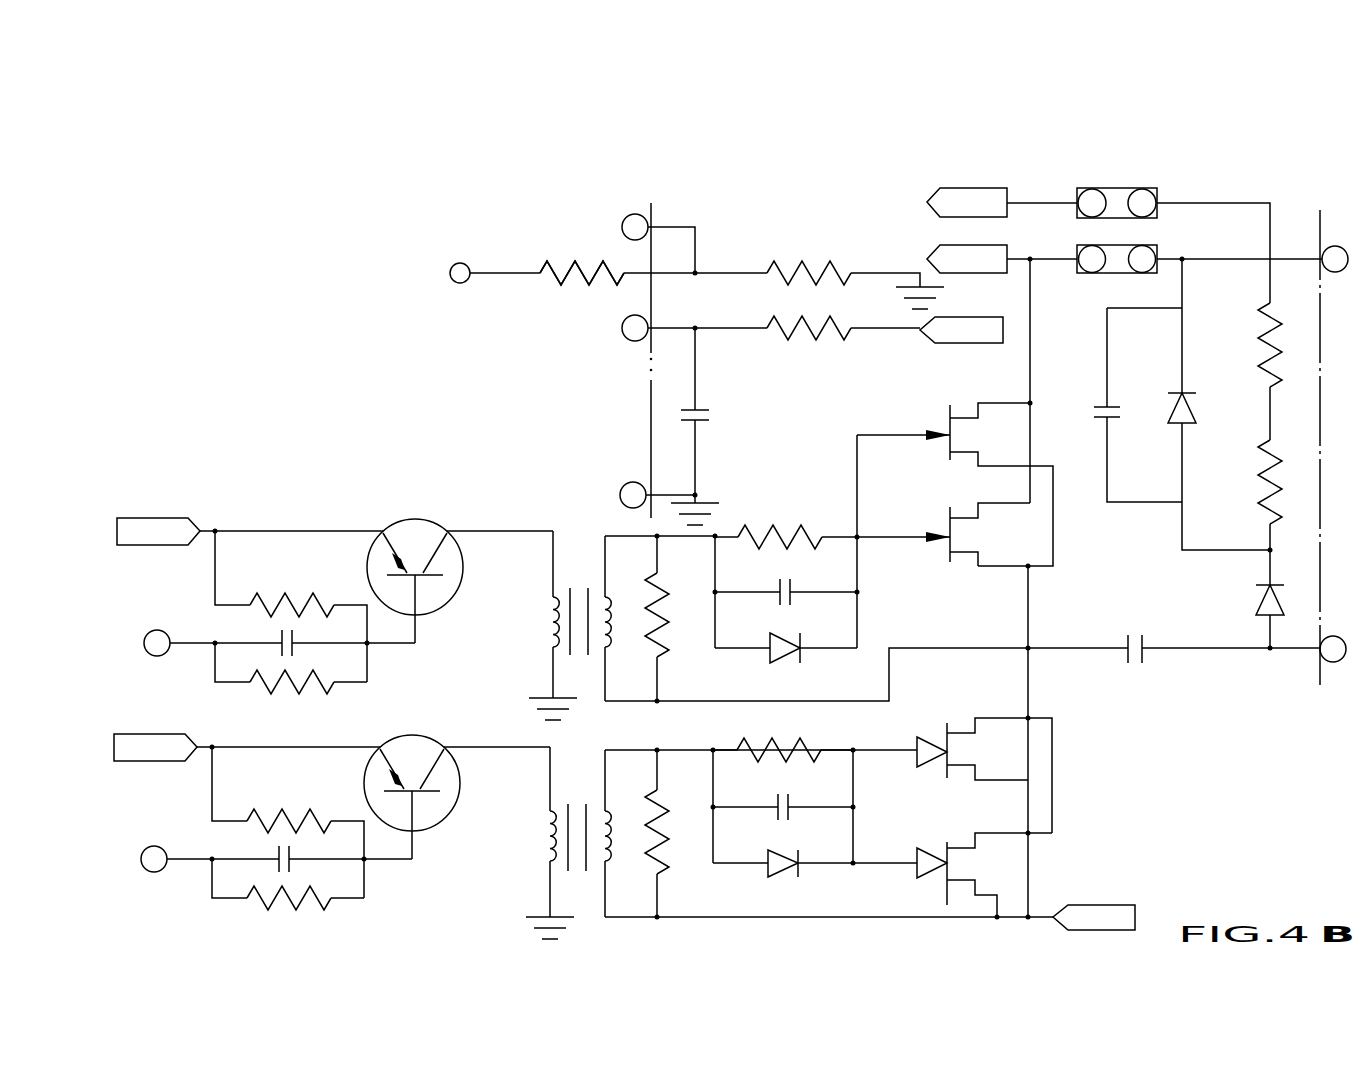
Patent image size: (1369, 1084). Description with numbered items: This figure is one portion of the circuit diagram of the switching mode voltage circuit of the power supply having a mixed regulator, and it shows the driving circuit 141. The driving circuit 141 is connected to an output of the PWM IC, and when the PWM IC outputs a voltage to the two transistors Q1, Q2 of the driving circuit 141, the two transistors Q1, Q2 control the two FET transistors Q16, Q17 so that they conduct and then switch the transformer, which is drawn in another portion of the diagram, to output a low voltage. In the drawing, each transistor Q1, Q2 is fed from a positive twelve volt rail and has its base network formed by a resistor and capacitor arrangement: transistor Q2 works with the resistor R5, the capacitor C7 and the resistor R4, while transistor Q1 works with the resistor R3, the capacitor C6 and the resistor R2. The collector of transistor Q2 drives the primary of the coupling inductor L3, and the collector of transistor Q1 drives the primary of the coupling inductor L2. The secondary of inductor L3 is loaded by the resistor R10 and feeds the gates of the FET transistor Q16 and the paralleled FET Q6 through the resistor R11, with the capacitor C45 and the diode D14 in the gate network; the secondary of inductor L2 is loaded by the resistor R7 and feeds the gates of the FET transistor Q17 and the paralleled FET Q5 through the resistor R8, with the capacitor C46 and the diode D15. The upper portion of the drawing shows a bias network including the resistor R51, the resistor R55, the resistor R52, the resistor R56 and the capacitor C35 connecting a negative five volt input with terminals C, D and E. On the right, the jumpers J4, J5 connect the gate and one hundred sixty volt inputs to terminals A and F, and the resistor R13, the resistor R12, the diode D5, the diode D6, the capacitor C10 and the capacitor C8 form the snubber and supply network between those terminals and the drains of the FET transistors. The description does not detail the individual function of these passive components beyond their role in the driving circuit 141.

The driving circuit 141 is at (747, 199).
The resistor R51 is at (563, 263).
The resistor R55 is at (582, 286).
The resistor R52 is at (809, 259).
The resistor R56 is at (809, 314).
The capacitor C35 is at (719, 411).
The jumper J4 is at (1096, 193).
The jumper J5 is at (1096, 249).
The resistor R13 is at (1251, 345).
The resistor R12 is at (1250, 482).
The diode D5 is at (1251, 600).
The diode D6 is at (1164, 396).
The capacitor C10 is at (1116, 405).
The capacitor C8 is at (1137, 633).
The FET transistor Q16 is at (989, 472).
The transistor Q6 is at (978, 522).
The resistor R11 is at (786, 521).
The capacitor C45 is at (786, 581).
The diode D14 is at (786, 637).
The resistor R10 (50R) R10 is at (677, 618).
The transformer L3 is at (595, 616).
The transistor Q2 is at (433, 581).
The resistor R5 is at (291, 606).
The capacitor C7 is at (292, 636).
The resistor R4 is at (291, 684).
The transistor Q1 is at (429, 797).
The resistor R3 is at (288, 822).
The capacitor C6 is at (289, 852).
The resistor R2 is at (288, 900).
The transformer L2 is at (593, 832).
The resistor R7 is at (671, 833).
The resistor R8 is at (783, 735).
The capacitor C46 is at (783, 796).
The diode D15 is at (783, 850).
The transistor Q5 is at (952, 759).
The FET transistor Q17 is at (952, 857).